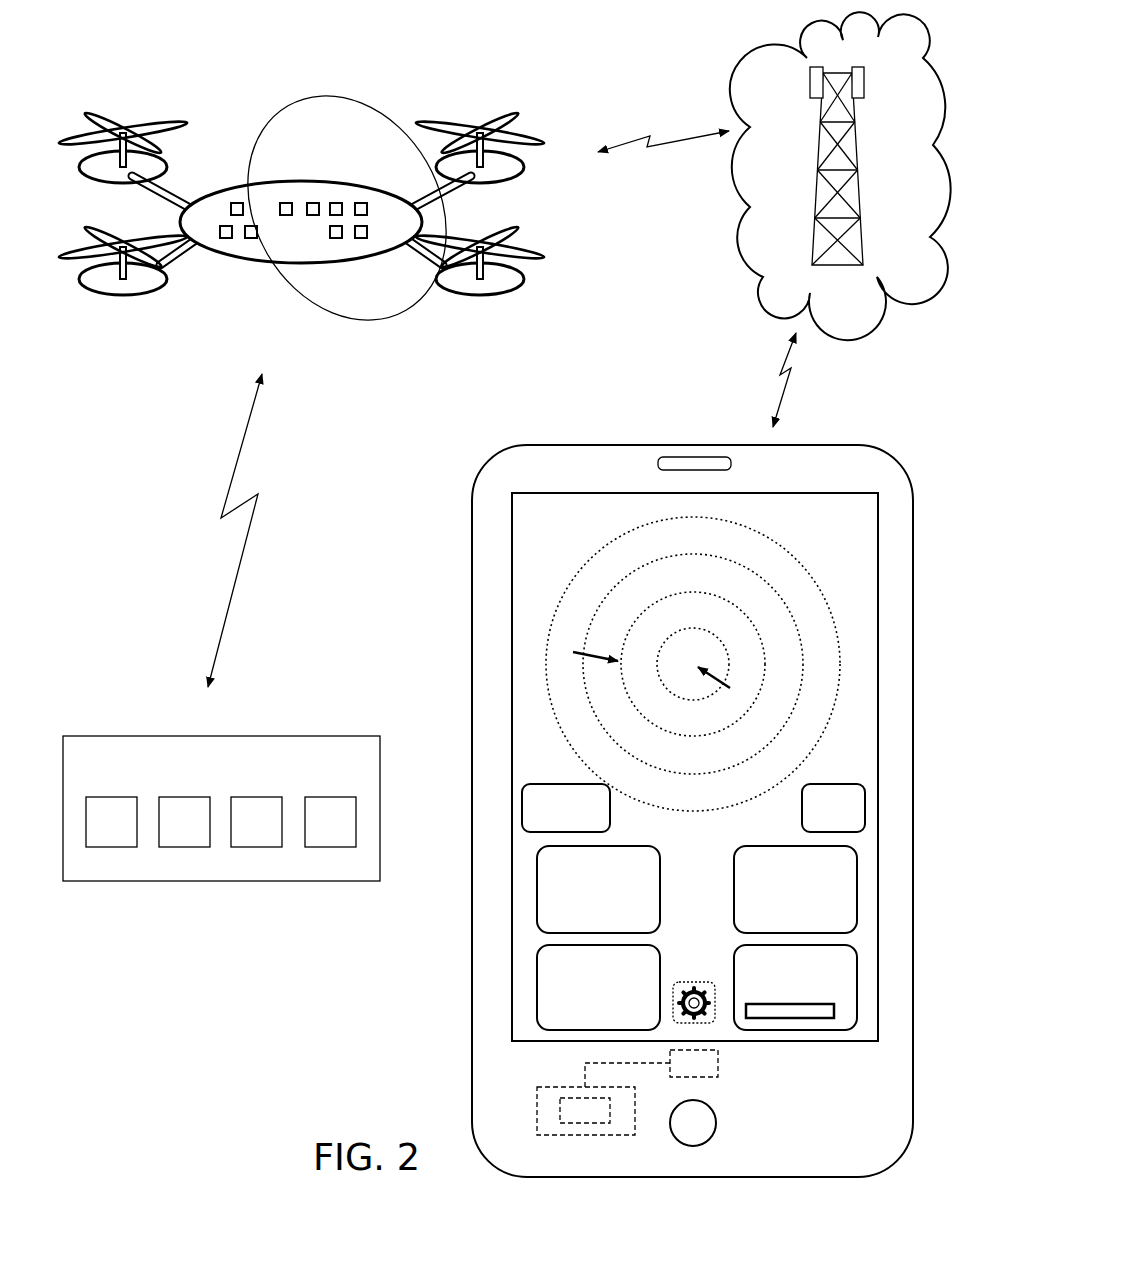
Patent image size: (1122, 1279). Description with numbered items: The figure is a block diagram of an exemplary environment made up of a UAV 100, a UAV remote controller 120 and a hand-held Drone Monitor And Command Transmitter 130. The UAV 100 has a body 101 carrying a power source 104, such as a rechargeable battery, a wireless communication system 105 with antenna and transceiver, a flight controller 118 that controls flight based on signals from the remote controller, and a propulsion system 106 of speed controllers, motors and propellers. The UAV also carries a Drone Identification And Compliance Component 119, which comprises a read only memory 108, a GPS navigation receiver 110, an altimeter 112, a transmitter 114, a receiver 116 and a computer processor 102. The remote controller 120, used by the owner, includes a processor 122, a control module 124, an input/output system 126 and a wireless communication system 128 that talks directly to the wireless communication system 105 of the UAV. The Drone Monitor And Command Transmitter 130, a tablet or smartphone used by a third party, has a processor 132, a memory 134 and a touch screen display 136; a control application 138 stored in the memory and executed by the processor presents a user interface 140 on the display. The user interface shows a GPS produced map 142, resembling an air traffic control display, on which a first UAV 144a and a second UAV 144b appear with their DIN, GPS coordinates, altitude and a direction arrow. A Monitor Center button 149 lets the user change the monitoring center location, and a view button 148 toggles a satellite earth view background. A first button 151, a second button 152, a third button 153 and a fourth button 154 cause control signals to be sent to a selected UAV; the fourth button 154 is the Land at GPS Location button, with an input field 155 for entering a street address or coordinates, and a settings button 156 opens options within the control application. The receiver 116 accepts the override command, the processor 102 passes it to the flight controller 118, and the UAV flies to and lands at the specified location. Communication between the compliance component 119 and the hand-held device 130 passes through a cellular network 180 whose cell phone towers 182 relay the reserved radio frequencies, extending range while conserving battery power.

The UAV 100 is at (240, 92).
The body 101 is at (178, 218).
The computer processor 102 is at (282, 203).
The power source 104 is at (237, 203).
The wireless communication system 105 is at (228, 239).
The propulsion system 106 is at (136, 305).
The read only memory 108 is at (312, 203).
The GPS navigation receiver 110 is at (337, 203).
The altimeter 112 is at (365, 203).
The transmitter 114 is at (340, 239).
The receiver 116 is at (368, 239).
The flight controller 118 is at (253, 239).
The Drone Identification And Compliance Component 119 is at (368, 114).
The UAV remote controller 120 is at (221, 808).
The processor 122 is at (111, 822).
The control module 124 is at (184, 822).
The input/output system 126 is at (256, 822).
The wireless communication system 128 is at (330, 822).
The Drone Monitor And Command Transmitter 130 is at (583, 440).
The processor 132 is at (719, 1078).
The memory 134 is at (541, 1136).
The touch screen display 136 is at (809, 492).
The control application 138 is at (580, 1124).
The user interface 140 is at (842, 500).
The GPS produced map 142 is at (812, 569).
The first UAV representation 144a is at (778, 727).
The second UAV representation 144b is at (548, 601).
The view button 148 is at (866, 810).
The Monitor Center button 149 is at (523, 808).
The first button 151 is at (537, 878).
The second button 152 is at (857, 883).
The third button 153 is at (537, 987).
The fourth button 154 is at (857, 980).
The input field 155 is at (834, 1013).
The settings button 156 is at (704, 1014).
The cellular network 180 is at (753, 70).
The cell phone towers 182 is at (805, 114).